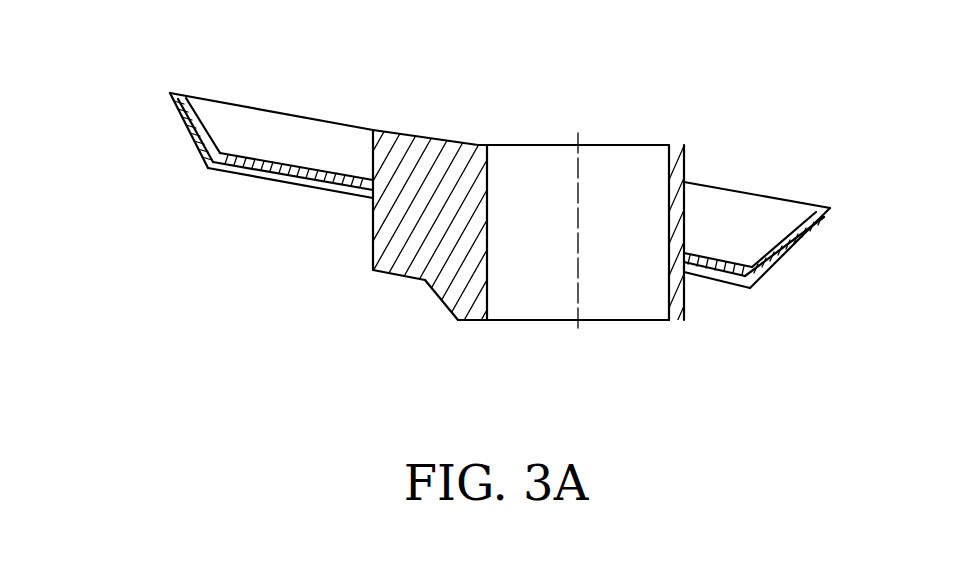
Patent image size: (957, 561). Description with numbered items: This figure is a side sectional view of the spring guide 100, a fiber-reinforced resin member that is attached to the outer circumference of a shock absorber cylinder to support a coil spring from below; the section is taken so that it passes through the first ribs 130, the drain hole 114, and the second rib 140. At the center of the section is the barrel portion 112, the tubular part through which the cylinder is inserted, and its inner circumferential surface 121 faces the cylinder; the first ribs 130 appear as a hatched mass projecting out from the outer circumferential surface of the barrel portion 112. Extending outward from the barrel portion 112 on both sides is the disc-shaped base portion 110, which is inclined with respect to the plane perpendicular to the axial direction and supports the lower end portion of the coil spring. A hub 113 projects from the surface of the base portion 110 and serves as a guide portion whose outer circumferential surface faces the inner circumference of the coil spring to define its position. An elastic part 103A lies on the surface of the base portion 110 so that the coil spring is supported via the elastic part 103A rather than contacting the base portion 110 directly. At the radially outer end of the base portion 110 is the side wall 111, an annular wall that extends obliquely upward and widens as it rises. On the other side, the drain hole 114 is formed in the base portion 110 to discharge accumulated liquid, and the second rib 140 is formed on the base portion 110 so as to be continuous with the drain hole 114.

The spring guide 100 is at (733, 118).
The elastic part 103A is at (232, 157).
The base portion 110 is at (295, 187).
The side wall 111 is at (185, 130).
The barrel portion 112 is at (478, 280).
The hub 113 is at (372, 248).
The drain hole 114 is at (720, 285).
The inner circumferential surface 121 is at (489, 176).
The first ribs 130 is at (440, 198).
The second rib 140 is at (740, 293).